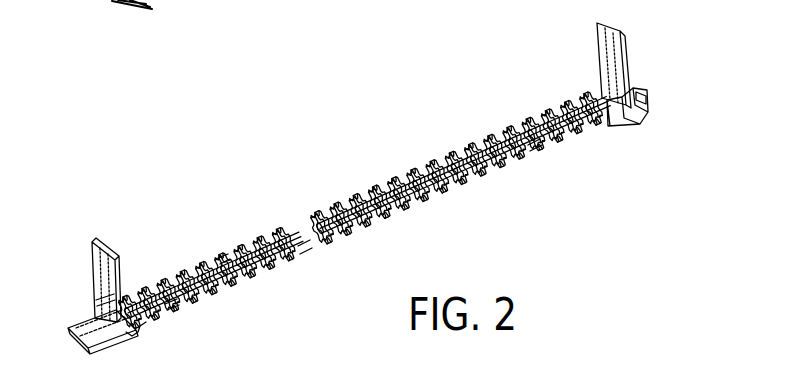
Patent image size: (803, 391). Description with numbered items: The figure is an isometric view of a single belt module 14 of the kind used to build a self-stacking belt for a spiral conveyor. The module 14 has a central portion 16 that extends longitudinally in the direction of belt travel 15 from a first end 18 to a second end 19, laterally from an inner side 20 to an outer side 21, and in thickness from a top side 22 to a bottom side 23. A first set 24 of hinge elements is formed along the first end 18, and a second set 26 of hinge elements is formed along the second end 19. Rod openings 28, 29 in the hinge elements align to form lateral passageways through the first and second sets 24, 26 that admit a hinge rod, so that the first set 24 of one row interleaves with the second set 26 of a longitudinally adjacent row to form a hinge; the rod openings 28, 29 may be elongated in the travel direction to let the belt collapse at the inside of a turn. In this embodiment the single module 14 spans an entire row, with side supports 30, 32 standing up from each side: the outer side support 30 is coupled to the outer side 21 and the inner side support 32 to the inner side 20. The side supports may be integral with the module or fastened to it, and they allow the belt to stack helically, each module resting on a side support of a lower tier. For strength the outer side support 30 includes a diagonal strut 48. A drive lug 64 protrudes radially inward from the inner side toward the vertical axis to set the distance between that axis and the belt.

The belt module 14 is at (253, 170).
The direction of belt travel 15 is at (652, 32).
The central portion 16 is at (387, 197).
The first end 18 is at (463, 183).
The second end 19 is at (468, 150).
The inner side 20 is at (640, 112).
The outer side 21 is at (88, 348).
The top side 22 is at (203, 270).
The bottom side 23 is at (133, 330).
The first set of hinge elements 24 is at (530, 150).
The second set of hinge elements 26 is at (530, 116).
The rod opening 28 is at (252, 278).
The rod opening 29 is at (222, 260).
The outer side support 30 is at (95, 282).
The inner side support 32 is at (608, 27).
The diagonal strut 48 is at (105, 300).
The drive lug 64 is at (645, 100).